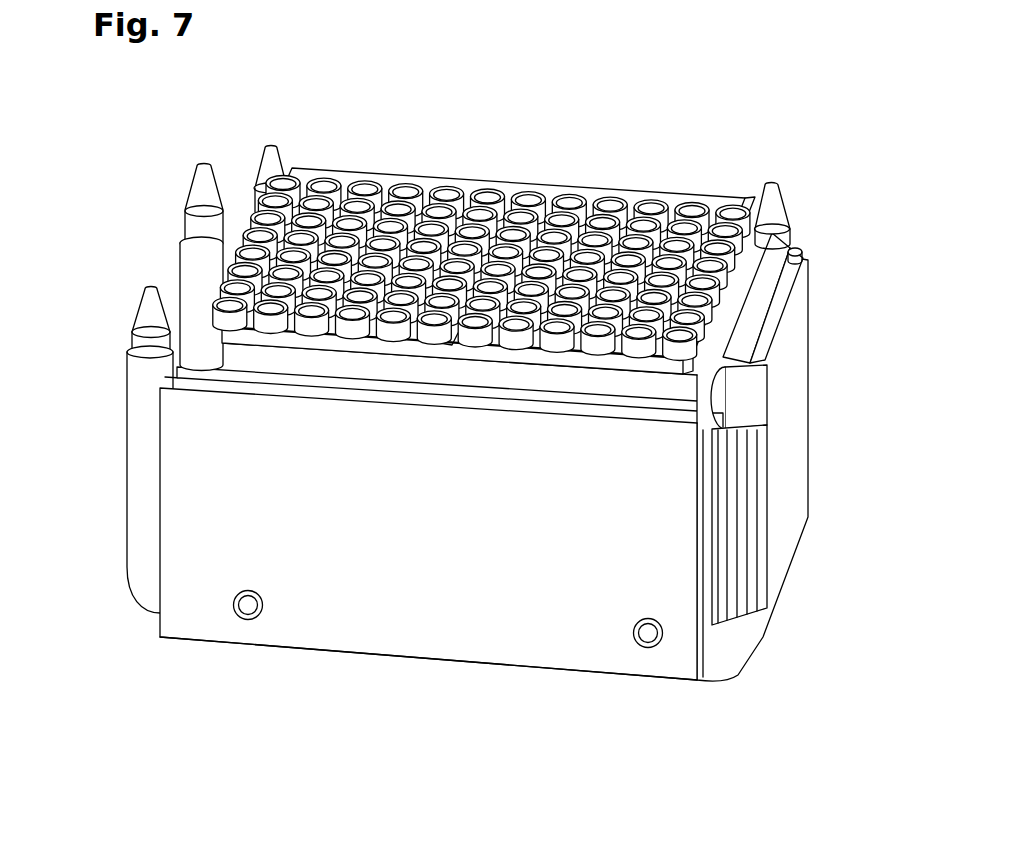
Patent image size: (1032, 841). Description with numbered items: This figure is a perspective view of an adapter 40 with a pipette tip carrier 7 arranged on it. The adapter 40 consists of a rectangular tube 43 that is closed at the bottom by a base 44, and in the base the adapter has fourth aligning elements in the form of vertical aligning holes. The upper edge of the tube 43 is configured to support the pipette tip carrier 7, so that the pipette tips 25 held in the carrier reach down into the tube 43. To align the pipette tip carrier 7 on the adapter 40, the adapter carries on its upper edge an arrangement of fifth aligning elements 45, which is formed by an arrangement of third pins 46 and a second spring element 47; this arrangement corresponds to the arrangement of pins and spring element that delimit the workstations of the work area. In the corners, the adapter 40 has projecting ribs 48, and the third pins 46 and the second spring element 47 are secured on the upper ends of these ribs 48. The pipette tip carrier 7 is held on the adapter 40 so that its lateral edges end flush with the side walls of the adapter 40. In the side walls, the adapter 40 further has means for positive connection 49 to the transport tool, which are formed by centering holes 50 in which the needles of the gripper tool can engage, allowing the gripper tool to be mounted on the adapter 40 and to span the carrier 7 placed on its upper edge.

The pipette tip carrier 7 is at (767, 297).
The pipette tips 25 is at (614, 203).
The adapter 40 is at (484, 533).
The rectangular tube 43 is at (516, 566).
The base 44 is at (493, 670).
The fifth aligning elements 45 is at (472, 377).
The third pins 46 is at (202, 193).
The second spring element 47 is at (750, 395).
The projecting ribs 48 is at (137, 435).
The means for positive connection 49 is at (435, 688).
The centering holes 50 is at (247, 619).